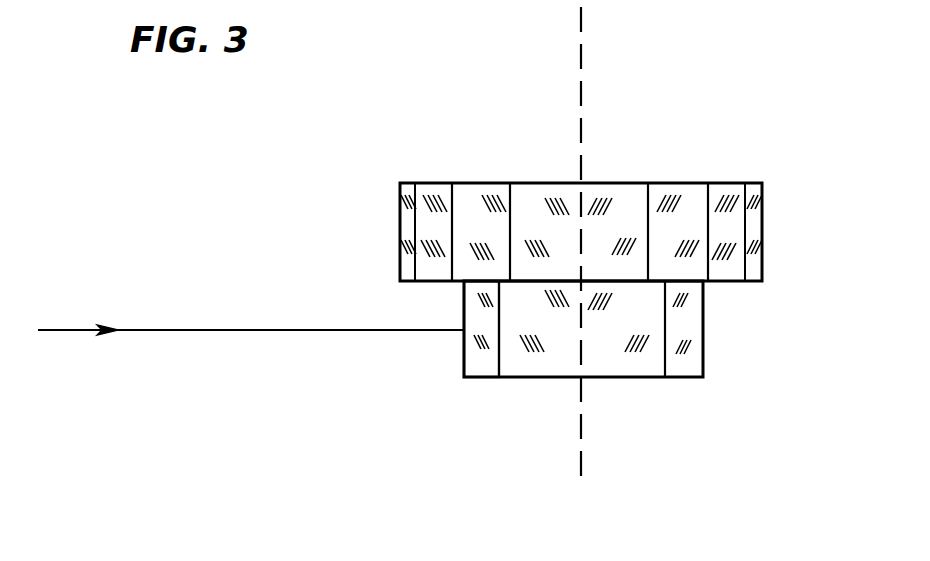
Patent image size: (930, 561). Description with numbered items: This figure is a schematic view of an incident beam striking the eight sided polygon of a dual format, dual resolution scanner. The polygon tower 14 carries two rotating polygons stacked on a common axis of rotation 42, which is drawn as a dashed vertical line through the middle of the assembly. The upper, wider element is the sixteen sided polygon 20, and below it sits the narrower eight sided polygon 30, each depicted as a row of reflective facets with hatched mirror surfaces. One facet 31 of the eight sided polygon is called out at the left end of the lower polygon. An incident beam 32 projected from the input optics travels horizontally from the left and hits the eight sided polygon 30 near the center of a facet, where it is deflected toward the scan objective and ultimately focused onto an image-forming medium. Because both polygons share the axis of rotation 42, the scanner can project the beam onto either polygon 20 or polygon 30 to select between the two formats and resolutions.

The polygon tower 14 is at (388, 204).
The sixteen sided polygon 20 is at (763, 214).
The eight sided polygon 30 is at (705, 362).
The facet 31 is at (512, 376).
The incident beam 32 is at (210, 330).
The axis of rotation 42 is at (582, 62).